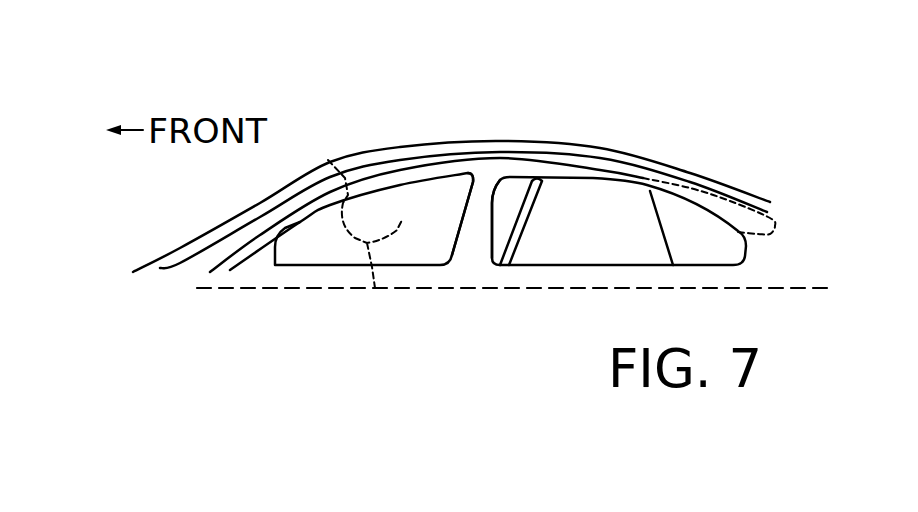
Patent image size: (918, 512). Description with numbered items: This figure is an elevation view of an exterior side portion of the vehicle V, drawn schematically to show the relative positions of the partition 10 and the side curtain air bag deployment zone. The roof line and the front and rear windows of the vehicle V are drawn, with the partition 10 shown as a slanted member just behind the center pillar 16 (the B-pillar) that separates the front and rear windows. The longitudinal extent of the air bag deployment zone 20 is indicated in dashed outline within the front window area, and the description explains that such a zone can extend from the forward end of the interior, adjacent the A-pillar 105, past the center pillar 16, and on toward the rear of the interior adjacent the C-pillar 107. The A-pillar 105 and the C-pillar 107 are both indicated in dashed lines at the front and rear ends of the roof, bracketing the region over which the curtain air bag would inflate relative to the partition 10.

The vehicle V is at (600, 148).
The partition 10 is at (546, 207).
The center pillar 16 is at (475, 245).
The air bag deployment zone 20 is at (374, 219).
The A-pillar 105 is at (328, 160).
The C-pillar 107 is at (707, 188).